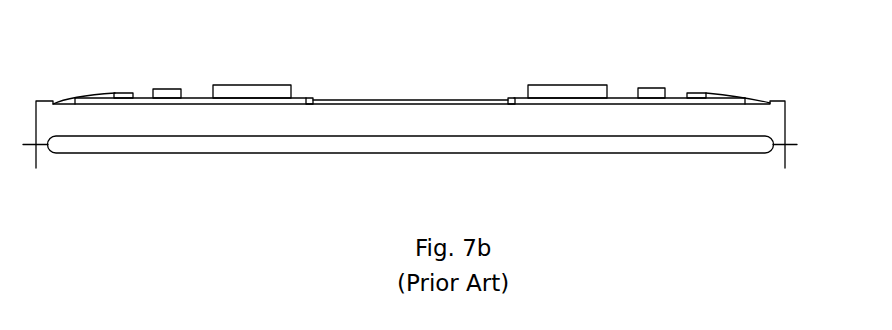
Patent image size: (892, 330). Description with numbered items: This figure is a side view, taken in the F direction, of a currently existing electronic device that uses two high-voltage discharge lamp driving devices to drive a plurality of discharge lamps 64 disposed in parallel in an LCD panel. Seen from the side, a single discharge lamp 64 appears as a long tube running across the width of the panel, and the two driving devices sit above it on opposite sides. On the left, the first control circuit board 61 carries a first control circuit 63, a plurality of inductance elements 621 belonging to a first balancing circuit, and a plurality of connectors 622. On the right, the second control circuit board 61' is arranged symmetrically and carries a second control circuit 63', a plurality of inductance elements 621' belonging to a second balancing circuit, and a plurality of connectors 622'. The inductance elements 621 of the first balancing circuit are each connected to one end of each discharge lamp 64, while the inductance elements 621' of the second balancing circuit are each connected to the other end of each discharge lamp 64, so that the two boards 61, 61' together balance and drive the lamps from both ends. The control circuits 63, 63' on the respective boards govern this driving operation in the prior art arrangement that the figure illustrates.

The first control circuit board 61 is at (334, 75).
The second control circuit board 61' is at (491, 75).
The first control circuit 63 is at (262, 72).
The second control circuit 63' is at (567, 73).
The inductance element 621 is at (190, 72).
The inductance element 621' is at (629, 69).
The connector 622 is at (145, 72).
The connector 622' is at (675, 71).
The discharge lamp 64 is at (427, 153).